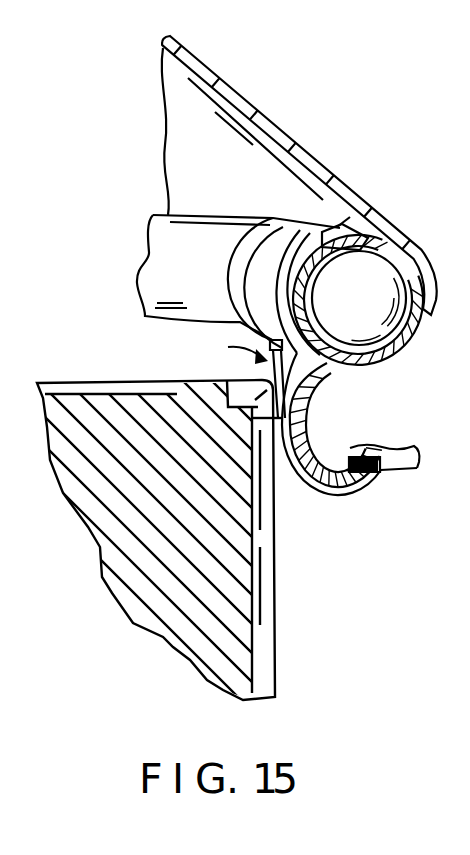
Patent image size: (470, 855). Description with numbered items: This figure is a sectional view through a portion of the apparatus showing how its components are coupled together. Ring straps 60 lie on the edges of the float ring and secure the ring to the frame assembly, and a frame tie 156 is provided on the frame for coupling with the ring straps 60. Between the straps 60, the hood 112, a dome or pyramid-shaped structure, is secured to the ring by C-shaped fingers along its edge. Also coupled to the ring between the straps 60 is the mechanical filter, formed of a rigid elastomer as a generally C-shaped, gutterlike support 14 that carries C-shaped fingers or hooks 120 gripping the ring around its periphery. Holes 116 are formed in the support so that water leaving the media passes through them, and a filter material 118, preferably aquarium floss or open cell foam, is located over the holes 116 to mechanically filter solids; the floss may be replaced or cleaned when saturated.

The hood 112 is at (303, 158).
The C-shaped fingers or hooks 120 is at (349, 218).
The ring straps 60 is at (240, 302).
The frame tie 156 is at (317, 412).
The hook strap 14 is at (405, 452).
The holes 116 is at (307, 477).
The filter material 118 is at (371, 476).